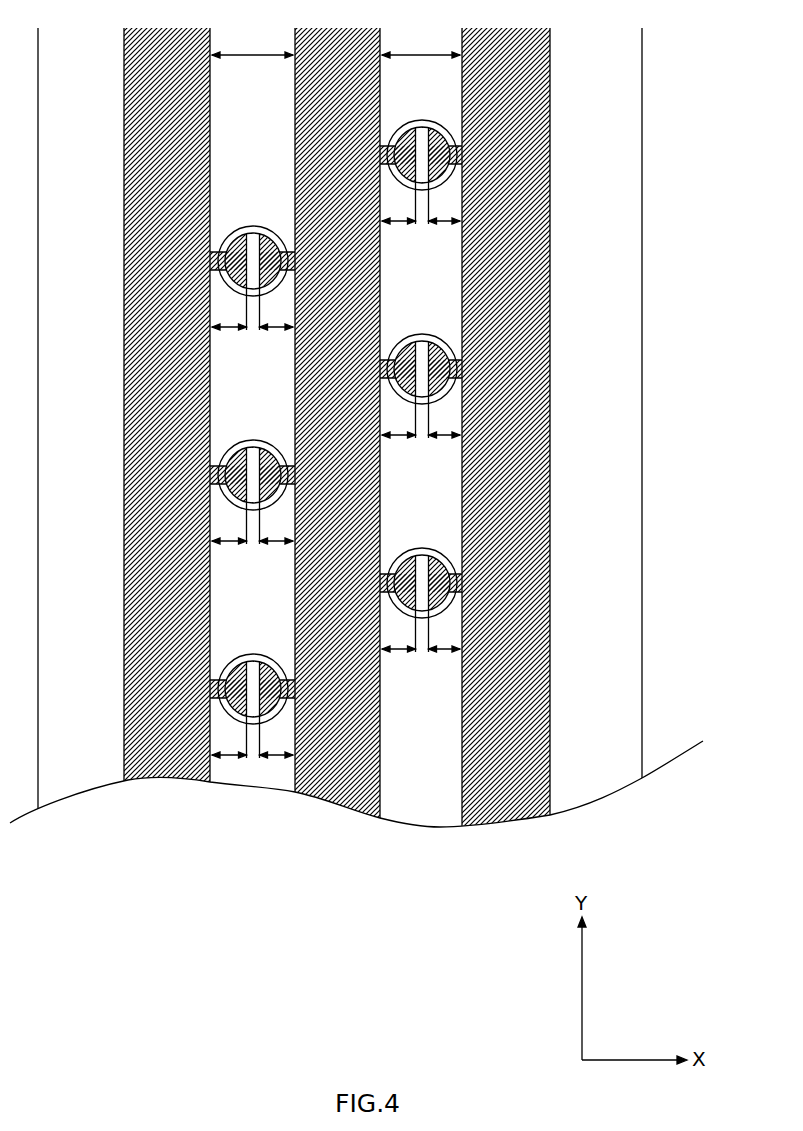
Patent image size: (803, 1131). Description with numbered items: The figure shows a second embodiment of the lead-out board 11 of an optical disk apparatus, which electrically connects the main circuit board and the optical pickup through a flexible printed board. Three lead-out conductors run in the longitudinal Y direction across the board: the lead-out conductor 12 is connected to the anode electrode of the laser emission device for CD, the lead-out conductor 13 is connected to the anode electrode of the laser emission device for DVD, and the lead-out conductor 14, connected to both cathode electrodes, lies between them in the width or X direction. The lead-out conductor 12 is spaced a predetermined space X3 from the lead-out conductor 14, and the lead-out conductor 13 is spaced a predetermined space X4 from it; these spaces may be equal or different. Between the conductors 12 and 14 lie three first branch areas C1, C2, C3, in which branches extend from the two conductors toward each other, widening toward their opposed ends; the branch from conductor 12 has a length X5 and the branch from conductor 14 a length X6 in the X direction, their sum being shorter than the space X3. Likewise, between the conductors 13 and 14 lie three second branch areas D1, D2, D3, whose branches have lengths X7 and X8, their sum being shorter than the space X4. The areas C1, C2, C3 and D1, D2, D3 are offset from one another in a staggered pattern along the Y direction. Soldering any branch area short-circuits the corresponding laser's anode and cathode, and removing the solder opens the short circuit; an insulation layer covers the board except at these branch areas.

The lead-out board 11 is at (622, 208).
The lead-out conductor 12 is at (512, 808).
The lead-out conductor 13 is at (173, 780).
The lead-out conductor 14 is at (340, 798).
The first branch area C1 is at (447, 130).
The first branch area C2 is at (447, 344).
The first branch area C3 is at (447, 558).
The second branch area D1 is at (227, 243).
The second branch area D2 is at (227, 457).
The second branch area D3 is at (227, 671).
The predetermined space X3 is at (421, 45).
The predetermined space X4 is at (252, 45).
The branch length X5 is at (445, 447).
The branch length X6 is at (399, 447).
The branch length X7 is at (229, 554).
The branch length X8 is at (277, 554).